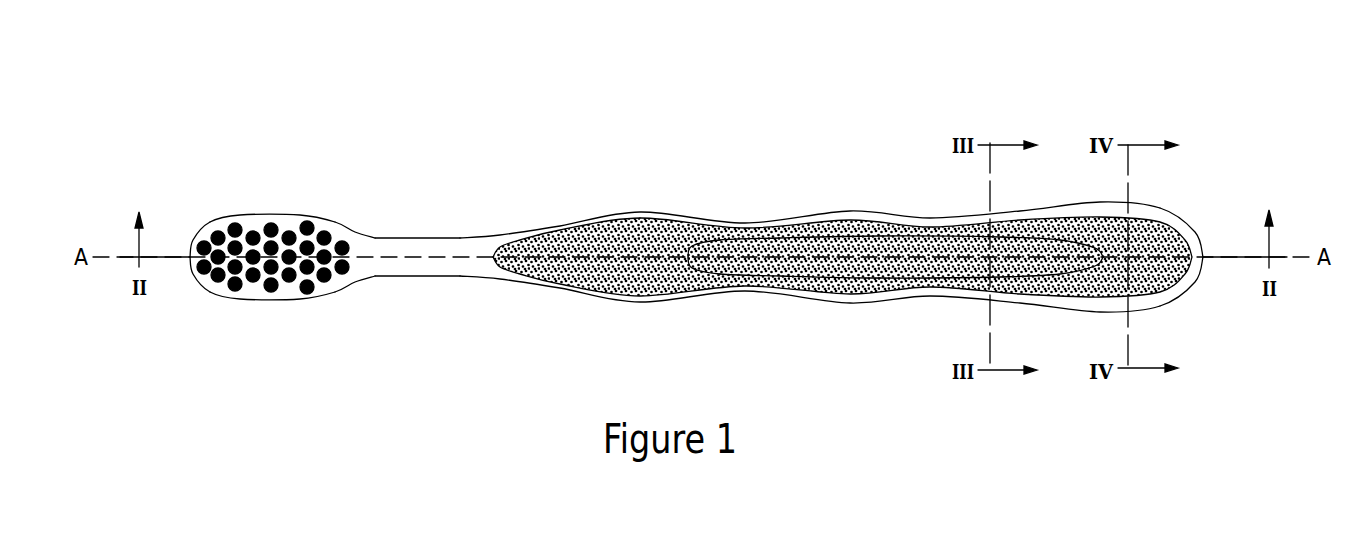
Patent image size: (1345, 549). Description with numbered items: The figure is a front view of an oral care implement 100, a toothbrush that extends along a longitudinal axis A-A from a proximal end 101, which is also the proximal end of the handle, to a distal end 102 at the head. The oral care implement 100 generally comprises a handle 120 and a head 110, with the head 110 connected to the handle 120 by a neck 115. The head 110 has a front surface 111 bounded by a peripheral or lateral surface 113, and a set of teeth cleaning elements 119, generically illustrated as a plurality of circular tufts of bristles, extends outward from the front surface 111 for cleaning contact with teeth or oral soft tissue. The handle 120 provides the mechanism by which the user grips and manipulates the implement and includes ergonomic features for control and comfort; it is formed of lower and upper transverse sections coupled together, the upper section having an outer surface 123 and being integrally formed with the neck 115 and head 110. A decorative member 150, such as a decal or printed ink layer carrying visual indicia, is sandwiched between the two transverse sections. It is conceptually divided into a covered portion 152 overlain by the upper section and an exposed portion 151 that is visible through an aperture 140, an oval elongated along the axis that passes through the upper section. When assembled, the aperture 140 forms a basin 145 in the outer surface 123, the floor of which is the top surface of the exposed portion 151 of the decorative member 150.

The oral care implement 100 is at (357, 87).
The proximal end 101 is at (1200, 280).
The distal end 102 is at (192, 263).
The head 110 is at (245, 215).
The front surface 111 is at (223, 228).
The peripheral or lateral surface 113 is at (305, 302).
The neck 115 is at (427, 247).
The teeth cleaning elements 119 is at (248, 265).
The handle 120 is at (843, 212).
The outer surface 123 is at (586, 294).
The aperture 140 is at (790, 287).
The basin 145 is at (800, 323).
The decorative member 150 is at (797, 250).
The exposed portion 151 is at (718, 240).
The covered portion 152 is at (622, 228).